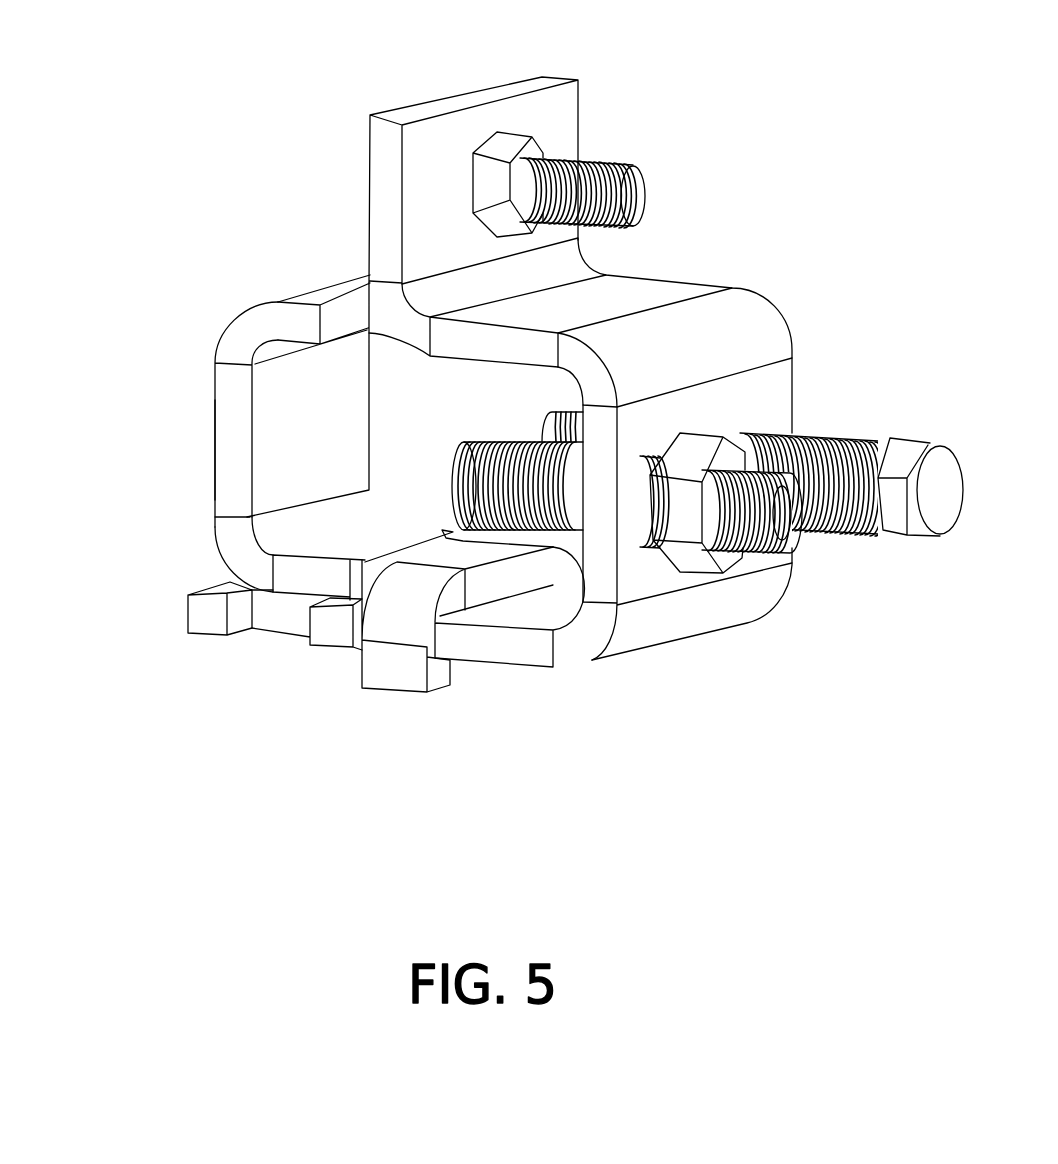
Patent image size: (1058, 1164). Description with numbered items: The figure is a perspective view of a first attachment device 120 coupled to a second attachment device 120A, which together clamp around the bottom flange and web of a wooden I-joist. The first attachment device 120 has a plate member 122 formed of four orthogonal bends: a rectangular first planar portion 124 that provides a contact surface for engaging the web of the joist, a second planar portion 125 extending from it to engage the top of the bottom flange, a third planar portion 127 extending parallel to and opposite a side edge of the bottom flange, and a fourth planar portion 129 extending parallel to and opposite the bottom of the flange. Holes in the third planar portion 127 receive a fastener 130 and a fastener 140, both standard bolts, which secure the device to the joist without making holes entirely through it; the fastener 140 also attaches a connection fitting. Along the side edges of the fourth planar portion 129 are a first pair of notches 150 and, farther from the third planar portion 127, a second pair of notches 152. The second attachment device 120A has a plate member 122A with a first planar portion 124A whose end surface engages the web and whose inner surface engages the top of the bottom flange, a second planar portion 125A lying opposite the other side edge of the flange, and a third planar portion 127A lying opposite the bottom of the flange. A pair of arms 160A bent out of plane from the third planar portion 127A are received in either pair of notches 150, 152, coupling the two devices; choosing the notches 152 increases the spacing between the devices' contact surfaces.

The attachment device 120 is at (616, 100).
The second attachment device 120A is at (148, 382).
The plate member 122 is at (372, 112).
The plate member 122A is at (238, 312).
The first planar portion 124 is at (476, 125).
The first planar portion 124A is at (301, 316).
The second planar portion 125 is at (632, 306).
The second planar portion 125A is at (230, 432).
The third planar portion 127 is at (745, 387).
The third planar portion 127A is at (303, 582).
The fourth planar portion 129 is at (472, 655).
The fastener 130 is at (913, 536).
The fastener 140 is at (808, 555).
The first pair of notches 150 is at (355, 618).
The second pair of notches 152 is at (245, 620).
The arms 160A is at (395, 685).